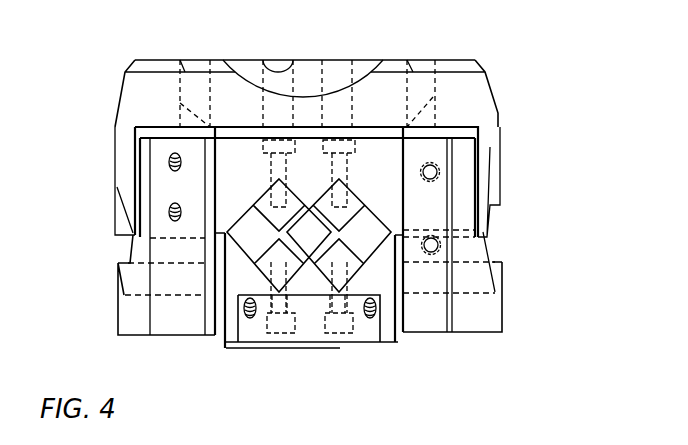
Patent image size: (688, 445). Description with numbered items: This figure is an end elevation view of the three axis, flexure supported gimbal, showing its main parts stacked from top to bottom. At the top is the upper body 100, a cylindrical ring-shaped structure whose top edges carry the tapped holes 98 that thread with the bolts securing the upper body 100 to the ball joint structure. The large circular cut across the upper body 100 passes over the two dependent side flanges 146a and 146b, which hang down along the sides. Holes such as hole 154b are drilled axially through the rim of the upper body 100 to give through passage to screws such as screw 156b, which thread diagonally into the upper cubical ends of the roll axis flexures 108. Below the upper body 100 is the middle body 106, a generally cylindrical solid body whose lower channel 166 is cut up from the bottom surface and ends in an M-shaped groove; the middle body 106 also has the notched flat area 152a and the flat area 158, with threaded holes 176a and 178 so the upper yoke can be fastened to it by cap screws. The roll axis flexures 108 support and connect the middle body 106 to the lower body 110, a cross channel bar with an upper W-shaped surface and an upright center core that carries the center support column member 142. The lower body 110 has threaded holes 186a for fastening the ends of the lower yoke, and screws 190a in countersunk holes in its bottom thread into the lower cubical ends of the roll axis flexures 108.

The tapped holes 98 is at (408, 62).
The hole 154b is at (284, 64).
The upper body 100 is at (485, 85).
The side flange 146a is at (123, 147).
The side flange 146b is at (492, 160).
The threaded hole 178 is at (181, 178).
The screw 156b is at (345, 150).
The threaded hole 176a is at (430, 238).
The roll axis flexures 108 is at (353, 218).
The flat area 158 is at (167, 324).
The lower channel 166 is at (220, 338).
The center support column member 142 is at (236, 350).
The threaded holes 186a is at (390, 376).
The screws 190a is at (282, 330).
The lower body 110 is at (422, 327).
The notched flat area 152a is at (443, 327).
The middle body 106 is at (502, 304).